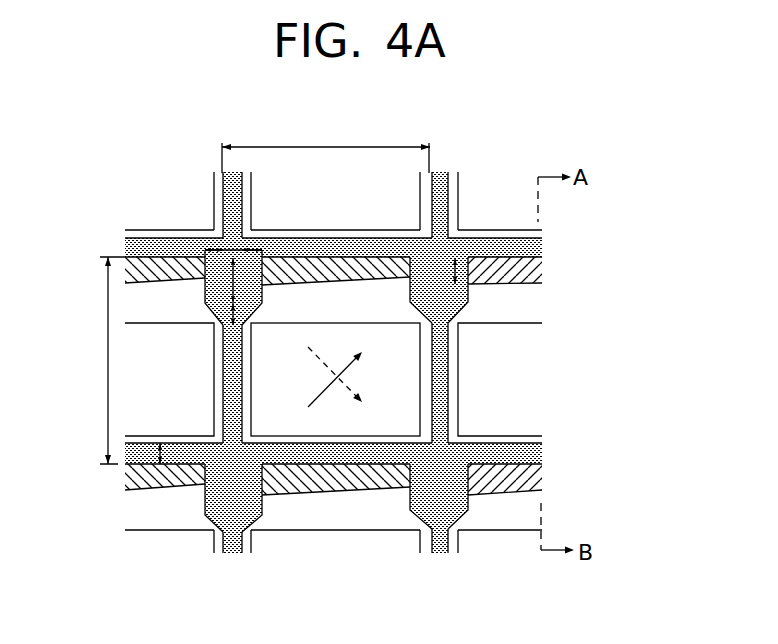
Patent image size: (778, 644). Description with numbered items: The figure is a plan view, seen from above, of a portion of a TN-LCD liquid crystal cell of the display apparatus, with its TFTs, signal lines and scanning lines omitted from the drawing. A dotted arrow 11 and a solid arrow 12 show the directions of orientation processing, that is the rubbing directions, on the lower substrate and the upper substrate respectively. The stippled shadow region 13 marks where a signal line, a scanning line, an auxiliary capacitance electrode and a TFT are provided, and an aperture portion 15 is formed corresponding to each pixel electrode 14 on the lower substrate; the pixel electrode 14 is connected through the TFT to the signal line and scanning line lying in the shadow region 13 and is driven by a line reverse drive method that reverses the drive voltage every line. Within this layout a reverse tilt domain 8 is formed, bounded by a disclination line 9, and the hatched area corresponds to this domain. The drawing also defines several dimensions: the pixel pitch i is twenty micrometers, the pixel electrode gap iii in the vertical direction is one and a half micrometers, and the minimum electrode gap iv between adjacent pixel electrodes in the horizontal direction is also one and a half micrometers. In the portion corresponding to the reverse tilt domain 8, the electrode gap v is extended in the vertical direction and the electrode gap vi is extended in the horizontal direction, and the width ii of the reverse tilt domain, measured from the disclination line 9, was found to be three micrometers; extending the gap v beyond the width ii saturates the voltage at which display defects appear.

The reverse tilt domain 8 is at (343, 268).
The disclination line 9 is at (373, 281).
The dotted arrow 11 is at (355, 386).
The solid arrow 12 is at (354, 373).
The shadow region 13 is at (540, 246).
The pixel electrode 14 is at (435, 410).
The aperture portion 15 is at (408, 362).
The pixel pitch i is at (262, 289).
The width of the reverse tilt domain ii is at (453, 268).
The pixel electrode gap iii is at (163, 467).
The minimum electrode gap iv is at (243, 186).
The electrode gap extended in the vertical direction v is at (232, 281).
The electrode gap extended in the horizontal direction vi is at (212, 237).